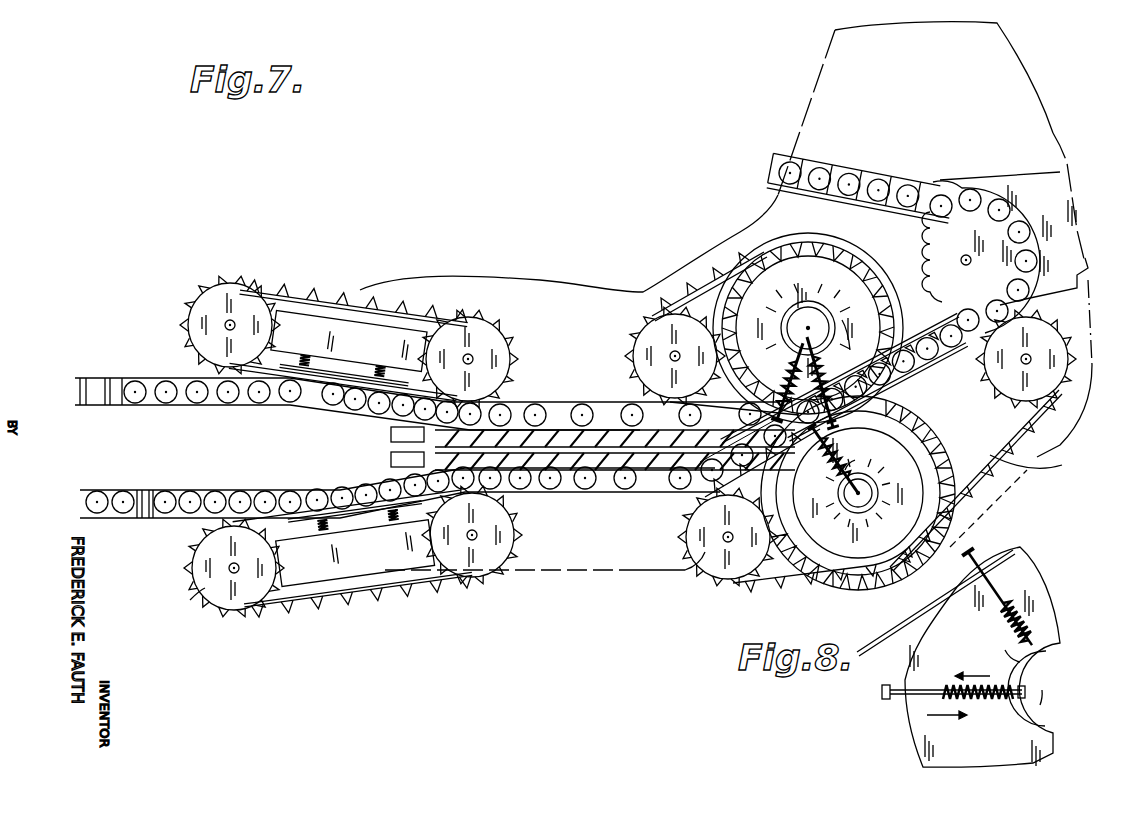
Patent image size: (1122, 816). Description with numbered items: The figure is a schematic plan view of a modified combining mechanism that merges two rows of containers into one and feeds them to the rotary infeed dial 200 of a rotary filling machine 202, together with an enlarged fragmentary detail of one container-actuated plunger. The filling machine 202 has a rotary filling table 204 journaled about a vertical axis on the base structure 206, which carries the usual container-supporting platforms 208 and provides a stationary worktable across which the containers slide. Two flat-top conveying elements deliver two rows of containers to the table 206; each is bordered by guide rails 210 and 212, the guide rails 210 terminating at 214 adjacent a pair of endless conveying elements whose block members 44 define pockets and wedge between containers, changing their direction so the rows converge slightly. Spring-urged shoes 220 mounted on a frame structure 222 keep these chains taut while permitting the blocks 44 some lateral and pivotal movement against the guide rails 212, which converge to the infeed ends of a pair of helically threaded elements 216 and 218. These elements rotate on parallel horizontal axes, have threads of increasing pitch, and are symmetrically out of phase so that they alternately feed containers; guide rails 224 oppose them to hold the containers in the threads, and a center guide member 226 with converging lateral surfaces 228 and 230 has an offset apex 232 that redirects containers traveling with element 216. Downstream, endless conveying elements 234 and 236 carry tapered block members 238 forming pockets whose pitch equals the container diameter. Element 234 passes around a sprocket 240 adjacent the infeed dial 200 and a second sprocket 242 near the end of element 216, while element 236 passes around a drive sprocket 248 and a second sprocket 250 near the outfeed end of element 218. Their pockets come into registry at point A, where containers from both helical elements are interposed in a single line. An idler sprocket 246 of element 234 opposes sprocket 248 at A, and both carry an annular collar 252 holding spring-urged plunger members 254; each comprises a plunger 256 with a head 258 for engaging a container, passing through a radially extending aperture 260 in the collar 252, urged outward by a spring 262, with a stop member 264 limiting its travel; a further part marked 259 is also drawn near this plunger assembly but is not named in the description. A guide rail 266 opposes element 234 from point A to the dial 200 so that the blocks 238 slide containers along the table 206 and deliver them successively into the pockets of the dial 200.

In FIG. 7, the rotary filling machine 202 is at (788, 124).
In FIG. 7, the rotary filling table 204 is at (775, 190).
In FIG. 7, the filling machine base structure 206 is at (745, 240).
In FIG. 7, the container-supporting platforms 208 is at (860, 178).
In FIG. 7, the rotary infeed dial 200 is at (872, 246).
In FIG. 7, the endless conveying element 236 is at (700, 290).
In FIG. 7, the second sprocket 250 is at (640, 330).
In FIG. 7, the plunger 256 is at (820, 302).
In FIG. 8, the plunger 256 is at (920, 705).
In FIG. 7, the guide rail 266 is at (952, 305).
In FIG. 7, the drive sprocket 248 is at (930, 320).
In FIG. 7, the lateral surface 230 is at (782, 334).
In FIG. 7, the spring-urged plunger members 254 is at (780, 385).
In FIG. 8, the spring-urged plunger members 254 is at (1015, 600).
In FIG. 7, the tapered block members 238 is at (630, 598).
In FIG. 7, the frame structure 222 is at (332, 330).
In FIG. 7, the guide rails 210 is at (146, 378).
In FIG. 7, the guide rails 224 is at (540, 400).
In FIG. 7, the helically threaded element 218 is at (588, 405).
In FIG. 7, the helically threaded element 216 is at (600, 490).
In FIG. 7, the guide rail termination 214 is at (310, 408).
In FIG. 7, the guide rails 212 is at (222, 510).
In FIG. 7, the block members 44 is at (205, 588).
In FIG. 7, the spring-urged shoes 220 is at (330, 525).
In FIG. 7, the combining point A is at (872, 415).
In FIG. 7, the apex 232 is at (818, 440).
In FIG. 7, the spring 259 is at (852, 460).
In FIG. 7, the annular collar 252 is at (880, 495).
In FIG. 8, the annular collar 252 is at (1020, 660).
In FIG. 7, the center guide member 226 is at (820, 512).
In FIG. 7, the lateral surface 228 is at (740, 495).
In FIG. 7, the idler sprocket 246 is at (930, 455).
In FIG. 7, the sprocket 240 is at (1055, 425).
In FIG. 7, the second sprocket 242 is at (710, 580).
In FIG. 7, the endless conveying element 234 is at (1050, 464).
In FIG. 7, the head 258 is at (912, 614).
In FIG. 8, the head 258 is at (884, 692).
In FIG. 8, the spring 262 is at (1020, 630).
In FIG. 8, the radially extending aperture 260 is at (1015, 682).
In FIG. 8, the stop member 264 is at (1025, 694).